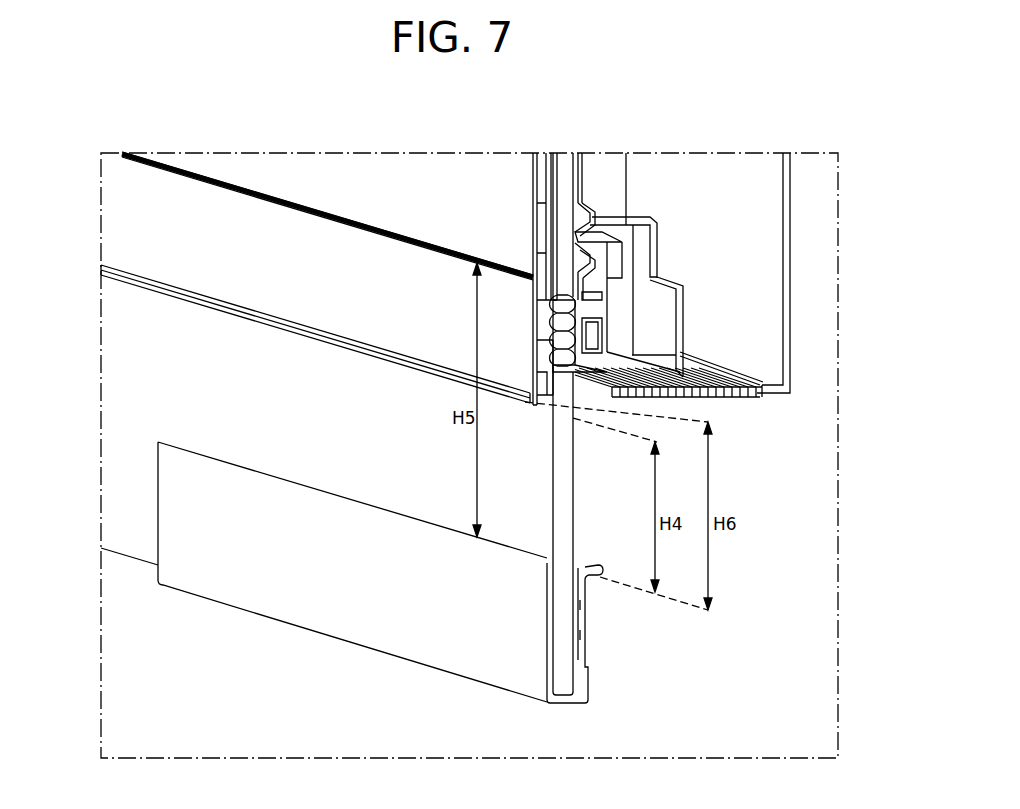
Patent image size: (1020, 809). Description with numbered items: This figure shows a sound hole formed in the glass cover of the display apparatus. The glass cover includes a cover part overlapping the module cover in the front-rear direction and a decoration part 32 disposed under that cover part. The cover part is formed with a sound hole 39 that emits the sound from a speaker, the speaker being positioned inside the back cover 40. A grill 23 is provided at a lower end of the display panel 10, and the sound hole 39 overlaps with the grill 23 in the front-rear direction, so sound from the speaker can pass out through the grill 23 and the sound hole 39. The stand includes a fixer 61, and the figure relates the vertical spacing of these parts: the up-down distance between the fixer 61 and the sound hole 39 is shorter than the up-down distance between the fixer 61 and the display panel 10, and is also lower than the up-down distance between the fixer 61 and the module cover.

The display panel 10 is at (400, 185).
The grill 23 is at (297, 245).
The decoration part 32 is at (118, 386).
The sound hole 39 is at (563, 320).
The back cover 40 is at (755, 268).
The fixer 61 is at (350, 615).